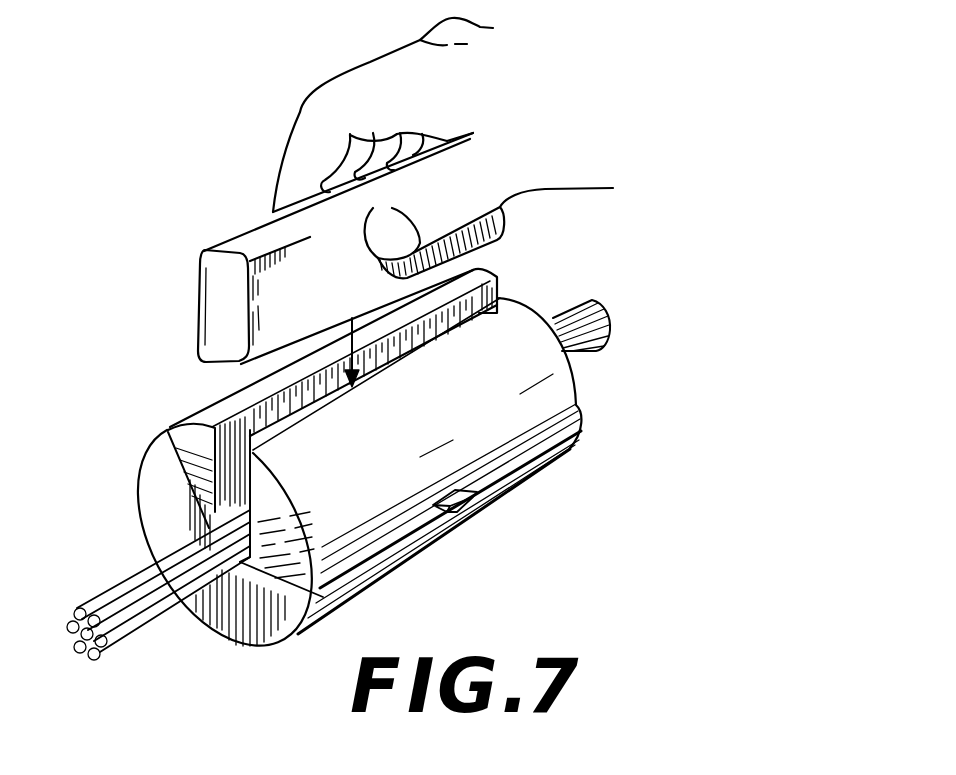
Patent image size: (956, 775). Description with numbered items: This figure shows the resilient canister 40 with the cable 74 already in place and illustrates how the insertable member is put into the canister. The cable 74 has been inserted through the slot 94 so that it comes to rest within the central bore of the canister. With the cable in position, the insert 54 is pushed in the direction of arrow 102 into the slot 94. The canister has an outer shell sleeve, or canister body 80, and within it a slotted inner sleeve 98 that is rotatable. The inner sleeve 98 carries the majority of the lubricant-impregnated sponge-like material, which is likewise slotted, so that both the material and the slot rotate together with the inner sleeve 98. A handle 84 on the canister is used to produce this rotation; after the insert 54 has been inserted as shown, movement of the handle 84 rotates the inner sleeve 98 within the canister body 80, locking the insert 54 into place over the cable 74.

The resilient canister 40 is at (580, 393).
The insert 54 is at (241, 234).
The cable 74 is at (133, 585).
The outer shell sleeve 80 is at (250, 613).
The handle 84 is at (474, 503).
The slot 94 is at (183, 477).
The slotted inner sleeve 98 is at (513, 327).
The arrow 102 is at (351, 320).